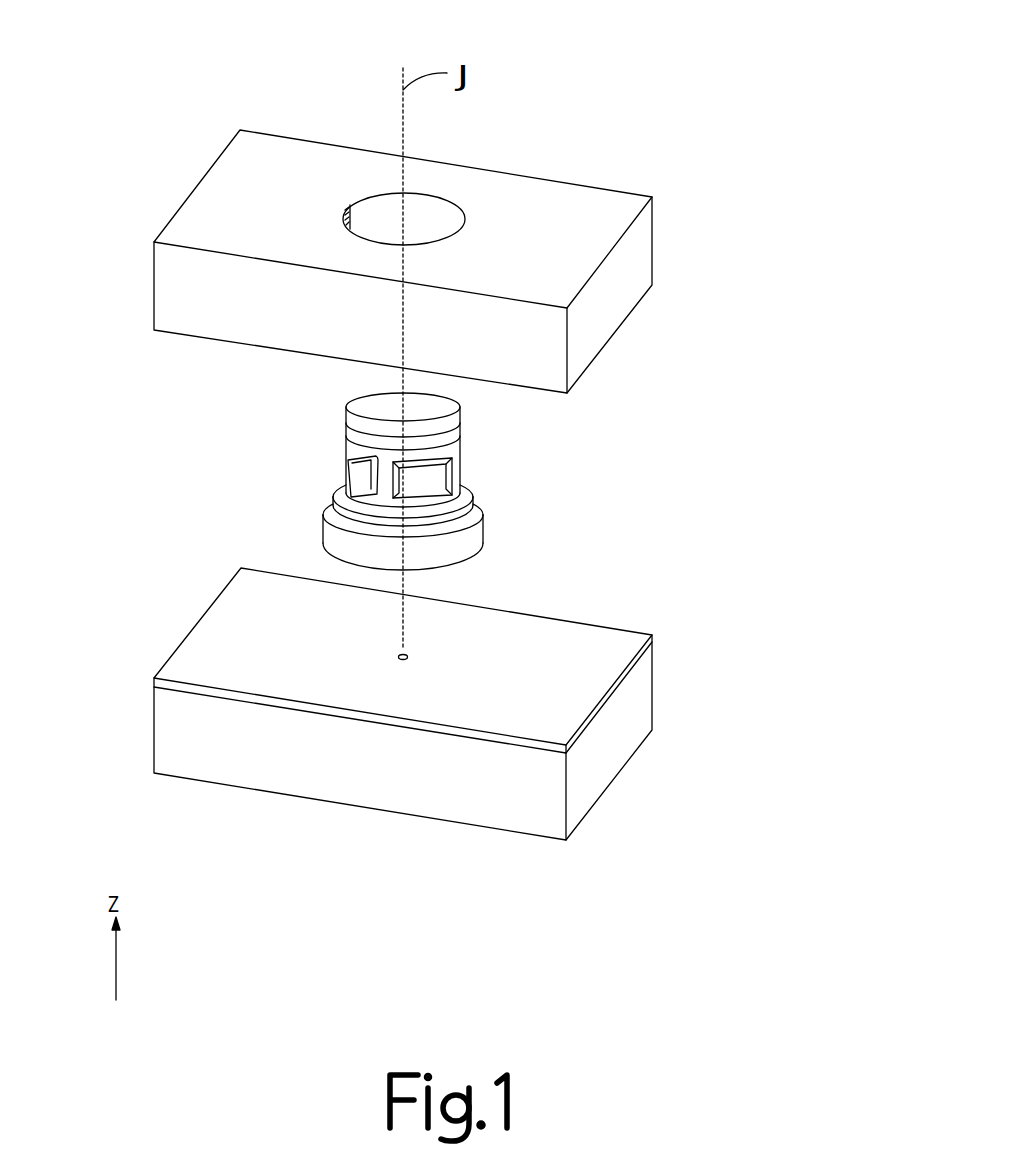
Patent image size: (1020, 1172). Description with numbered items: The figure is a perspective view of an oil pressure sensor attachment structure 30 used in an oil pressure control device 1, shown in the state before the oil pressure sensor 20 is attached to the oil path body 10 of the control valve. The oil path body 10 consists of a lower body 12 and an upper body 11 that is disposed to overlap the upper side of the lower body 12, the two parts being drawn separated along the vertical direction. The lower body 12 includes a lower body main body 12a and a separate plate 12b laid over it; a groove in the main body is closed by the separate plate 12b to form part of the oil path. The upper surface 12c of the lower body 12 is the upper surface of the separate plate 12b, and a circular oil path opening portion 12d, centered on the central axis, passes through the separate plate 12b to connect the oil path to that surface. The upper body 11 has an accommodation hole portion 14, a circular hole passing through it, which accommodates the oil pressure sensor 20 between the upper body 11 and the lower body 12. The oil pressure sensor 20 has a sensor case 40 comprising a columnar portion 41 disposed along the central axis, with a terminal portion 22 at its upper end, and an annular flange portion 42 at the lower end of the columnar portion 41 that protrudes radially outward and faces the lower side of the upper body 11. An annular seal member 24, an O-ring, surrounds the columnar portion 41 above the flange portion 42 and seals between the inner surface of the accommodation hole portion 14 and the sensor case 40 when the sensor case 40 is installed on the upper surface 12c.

The oil pressure control device 1 is at (692, 118).
The oil path body 10 is at (832, 440).
The upper body 11 is at (612, 322).
The lower body 12 is at (778, 612).
The lower body main body 12a is at (630, 703).
The separate plate 12b is at (595, 645).
The upper surface 12c is at (515, 675).
The oil path opening portion 12d is at (397, 655).
The accommodation hole portion 14 is at (438, 222).
The oil pressure sensor 20 is at (488, 461).
The terminal portion 22 is at (372, 413).
The seal member 24 is at (470, 499).
The oil pressure sensor attachment structure 30 is at (155, 503).
The sensor case 40 is at (345, 437).
The columnar portion 41 is at (372, 474).
The flange portion 42 is at (455, 549).